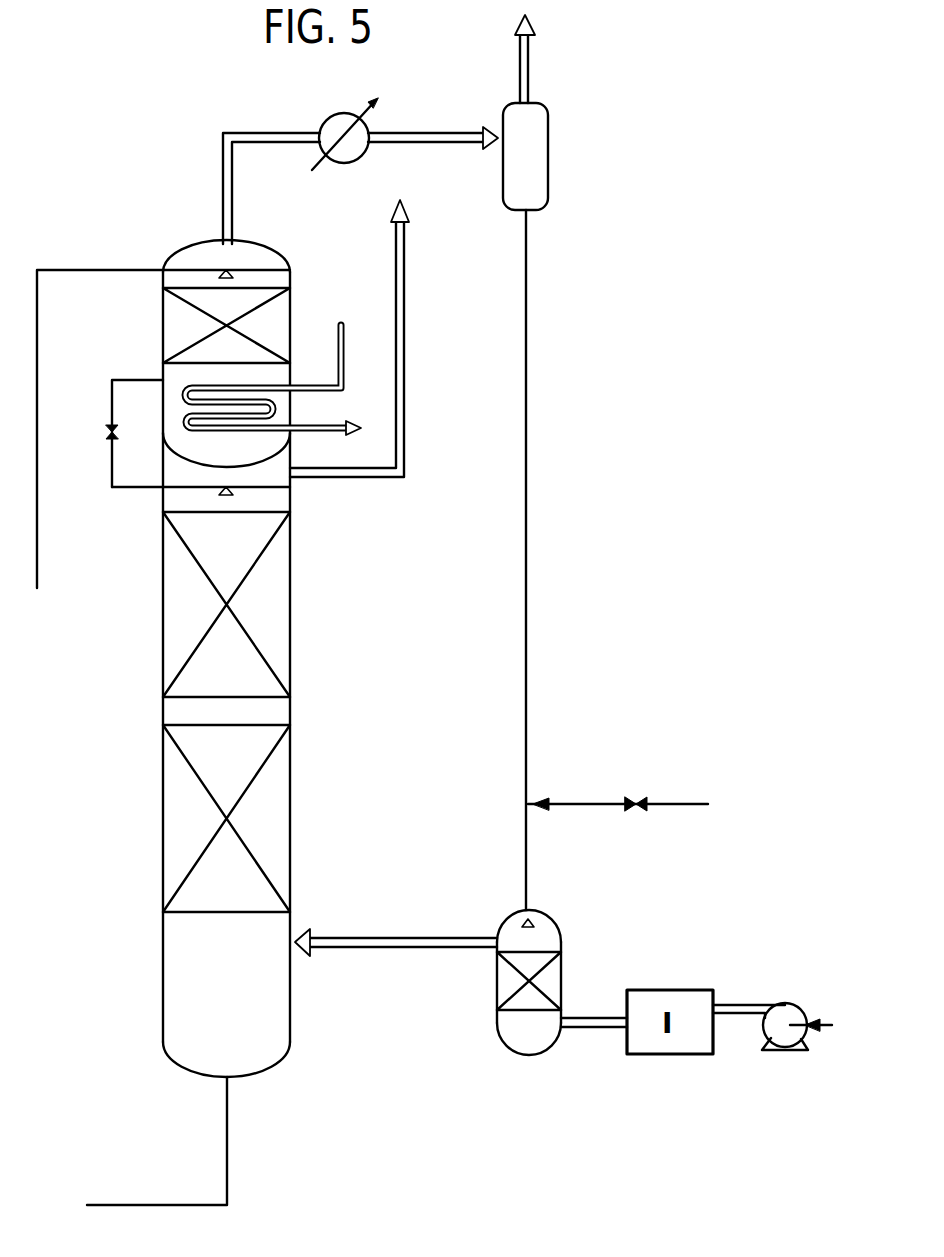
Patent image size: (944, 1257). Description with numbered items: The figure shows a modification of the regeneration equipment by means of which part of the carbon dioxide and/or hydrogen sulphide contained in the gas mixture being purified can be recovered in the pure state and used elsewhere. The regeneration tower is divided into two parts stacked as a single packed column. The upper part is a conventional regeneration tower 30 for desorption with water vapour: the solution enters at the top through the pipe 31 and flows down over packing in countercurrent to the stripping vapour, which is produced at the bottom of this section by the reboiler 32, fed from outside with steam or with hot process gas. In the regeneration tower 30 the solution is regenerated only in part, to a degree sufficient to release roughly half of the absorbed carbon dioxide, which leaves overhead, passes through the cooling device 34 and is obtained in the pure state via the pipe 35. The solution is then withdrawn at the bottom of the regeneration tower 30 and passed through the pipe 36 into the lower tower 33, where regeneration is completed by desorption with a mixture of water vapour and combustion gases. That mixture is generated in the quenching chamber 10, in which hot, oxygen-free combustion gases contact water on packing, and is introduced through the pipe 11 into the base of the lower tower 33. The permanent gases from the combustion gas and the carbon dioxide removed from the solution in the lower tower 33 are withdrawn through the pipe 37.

The quenching chamber 10 is at (562, 982).
The pipe 11 is at (396, 932).
The regeneration tower 30 is at (170, 342).
The pipe 31 is at (100, 413).
The reboiler 32 is at (286, 405).
The lower tower 33 is at (170, 716).
The cooling device 34 is at (403, 128).
The pipe 35 is at (535, 112).
The pipe 36 is at (121, 433).
The pipe 37 is at (365, 338).